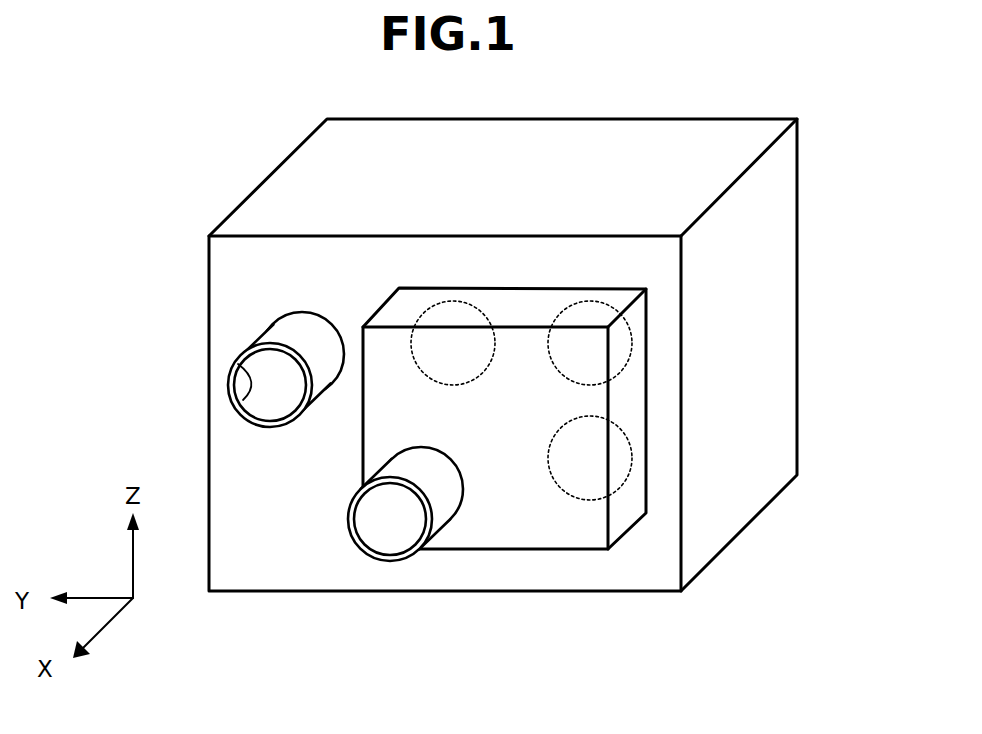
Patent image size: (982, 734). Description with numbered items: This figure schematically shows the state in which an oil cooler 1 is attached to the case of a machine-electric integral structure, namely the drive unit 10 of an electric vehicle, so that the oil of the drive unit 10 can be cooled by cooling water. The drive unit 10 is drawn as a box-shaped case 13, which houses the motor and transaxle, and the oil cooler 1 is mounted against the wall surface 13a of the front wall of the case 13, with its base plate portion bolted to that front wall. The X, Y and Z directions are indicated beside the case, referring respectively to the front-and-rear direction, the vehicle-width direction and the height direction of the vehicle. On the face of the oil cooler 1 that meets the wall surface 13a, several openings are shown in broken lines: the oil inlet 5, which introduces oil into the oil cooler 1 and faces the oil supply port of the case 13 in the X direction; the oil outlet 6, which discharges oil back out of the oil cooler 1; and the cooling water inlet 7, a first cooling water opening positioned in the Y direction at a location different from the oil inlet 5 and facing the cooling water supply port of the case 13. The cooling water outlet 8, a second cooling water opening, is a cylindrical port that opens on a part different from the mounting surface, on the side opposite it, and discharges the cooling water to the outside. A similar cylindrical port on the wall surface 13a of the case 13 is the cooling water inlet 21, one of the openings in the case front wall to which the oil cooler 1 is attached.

The oil cooler 1 is at (544, 556).
The oil inlet 5 is at (624, 363).
The oil outlet 6 is at (624, 478).
The cooling water inlet 7 is at (440, 380).
The cooling water outlet 8 is at (362, 520).
The drive unit 10 is at (498, 324).
The case 13 is at (781, 258).
The wall surface 13a is at (230, 276).
The cooling water inlet 21 is at (248, 398).